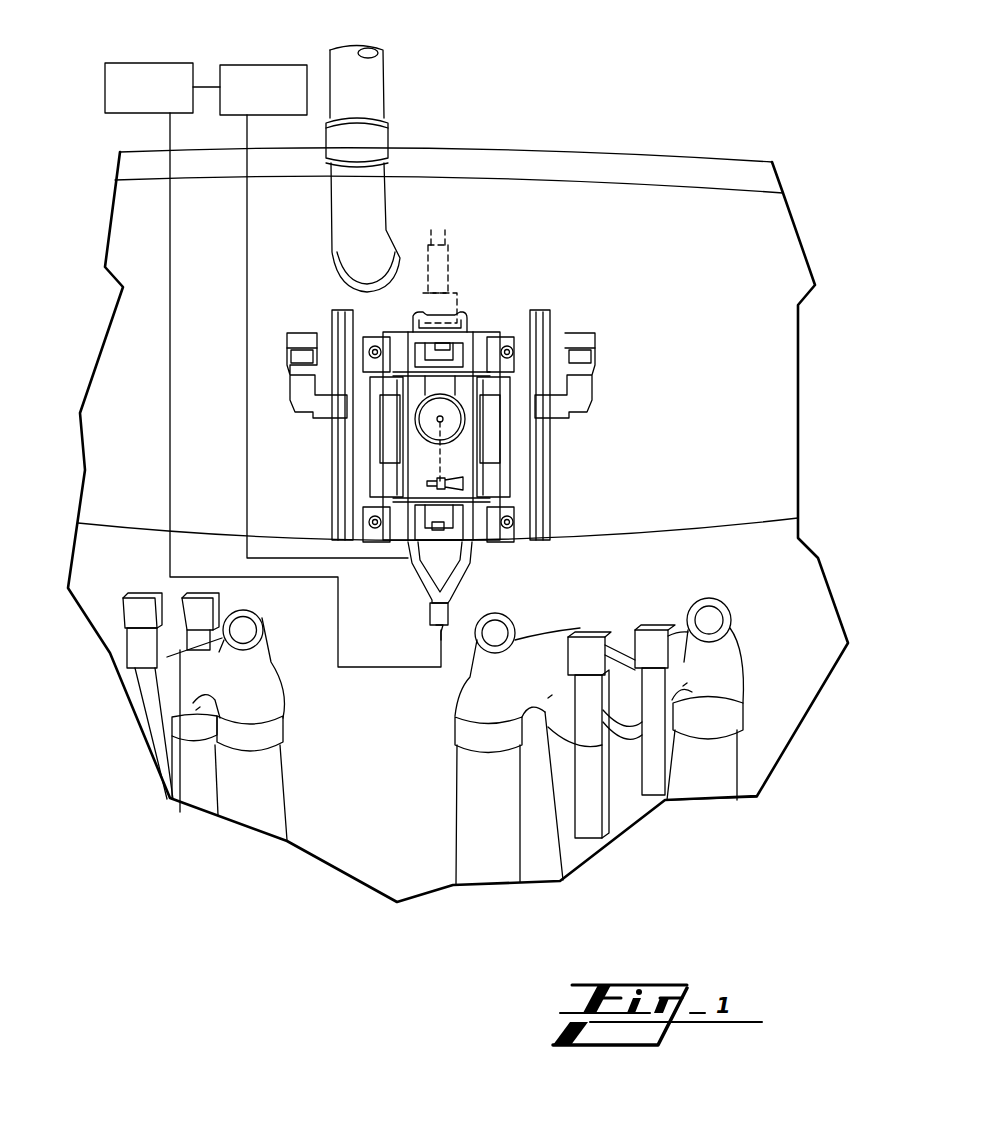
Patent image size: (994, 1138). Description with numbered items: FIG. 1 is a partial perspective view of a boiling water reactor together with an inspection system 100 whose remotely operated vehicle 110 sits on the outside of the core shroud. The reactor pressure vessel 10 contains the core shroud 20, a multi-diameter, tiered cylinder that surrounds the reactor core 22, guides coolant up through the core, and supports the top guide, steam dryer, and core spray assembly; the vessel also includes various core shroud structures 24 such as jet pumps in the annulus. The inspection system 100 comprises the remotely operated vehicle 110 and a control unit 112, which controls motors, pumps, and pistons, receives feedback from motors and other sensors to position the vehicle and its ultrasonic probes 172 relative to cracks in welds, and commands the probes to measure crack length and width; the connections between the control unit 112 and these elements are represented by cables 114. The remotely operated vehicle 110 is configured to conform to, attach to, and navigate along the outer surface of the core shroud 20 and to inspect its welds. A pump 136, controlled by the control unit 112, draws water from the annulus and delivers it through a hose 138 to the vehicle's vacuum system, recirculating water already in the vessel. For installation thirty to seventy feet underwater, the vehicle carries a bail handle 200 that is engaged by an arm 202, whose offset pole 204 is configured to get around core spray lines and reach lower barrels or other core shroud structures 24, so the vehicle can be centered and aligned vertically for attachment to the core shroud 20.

The reactor pressure vessel 10 is at (458, 472).
The core shroud 20 is at (766, 237).
The reactor core 22 is at (607, 143).
The core shroud structures 24 is at (410, 210).
The inspection system 100 is at (192, 70).
The remotely operated vehicle 110 is at (667, 353).
The control unit 112 is at (130, 101).
The cables 114 is at (170, 365).
The pump 136 is at (263, 90).
The hose 138 is at (248, 205).
The ultrasonic probes 172 is at (298, 340).
The bail handle 200 is at (441, 318).
The arm 202 is at (462, 267).
The pole 204 is at (448, 253).